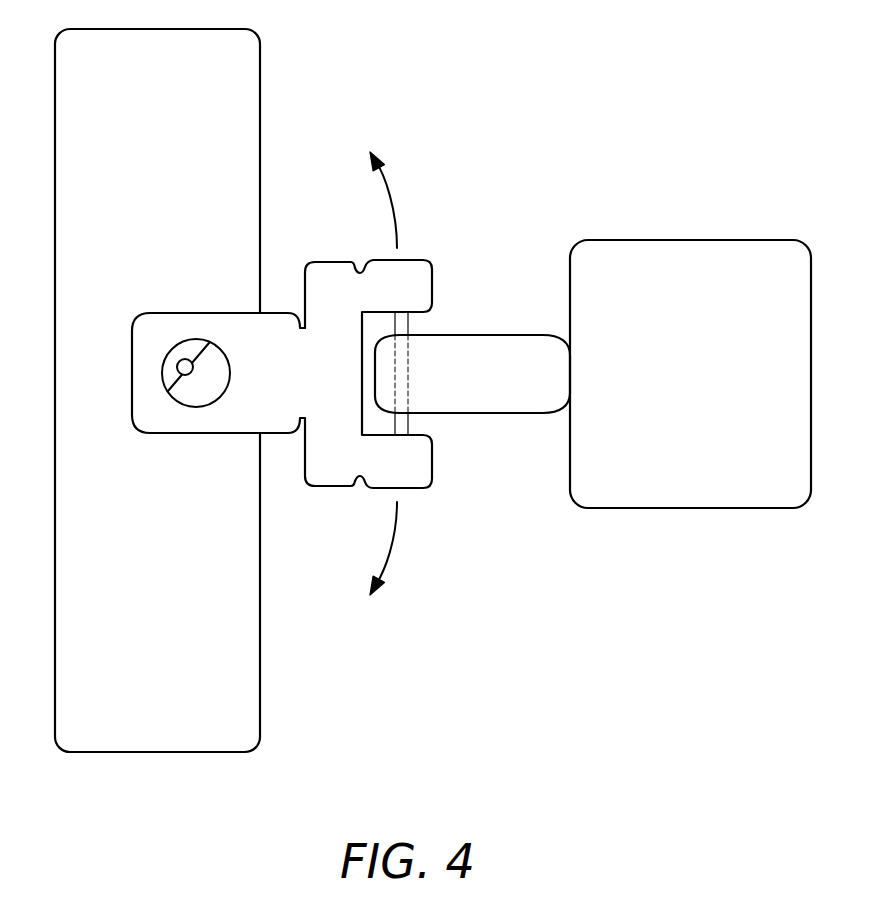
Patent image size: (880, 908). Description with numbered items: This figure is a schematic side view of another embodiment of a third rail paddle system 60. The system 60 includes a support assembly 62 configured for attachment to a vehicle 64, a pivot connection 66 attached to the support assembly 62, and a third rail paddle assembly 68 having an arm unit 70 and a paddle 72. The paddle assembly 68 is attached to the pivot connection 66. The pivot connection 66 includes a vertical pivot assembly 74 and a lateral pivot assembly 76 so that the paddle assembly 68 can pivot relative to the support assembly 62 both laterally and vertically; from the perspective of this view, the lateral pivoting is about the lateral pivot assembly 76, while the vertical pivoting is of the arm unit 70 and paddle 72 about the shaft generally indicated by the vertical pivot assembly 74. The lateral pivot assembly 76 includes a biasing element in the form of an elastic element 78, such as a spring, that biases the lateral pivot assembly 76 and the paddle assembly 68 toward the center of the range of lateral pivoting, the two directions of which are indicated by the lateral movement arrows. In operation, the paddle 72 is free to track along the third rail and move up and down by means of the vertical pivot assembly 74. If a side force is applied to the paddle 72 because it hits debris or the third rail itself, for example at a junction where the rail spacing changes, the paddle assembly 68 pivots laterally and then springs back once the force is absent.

The system 60 is at (690, 75).
The support assembly 62 is at (214, 740).
The vehicle 64 is at (41, 643).
The pivot connection 66 is at (290, 145).
The third rail paddle assembly 68 is at (474, 543).
The arm unit 70 is at (490, 403).
The paddle 72 is at (677, 500).
The vertical pivot assembly 74 is at (455, 496).
The lateral pivot assembly 76 is at (200, 394).
The elastic element 78 is at (176, 360).